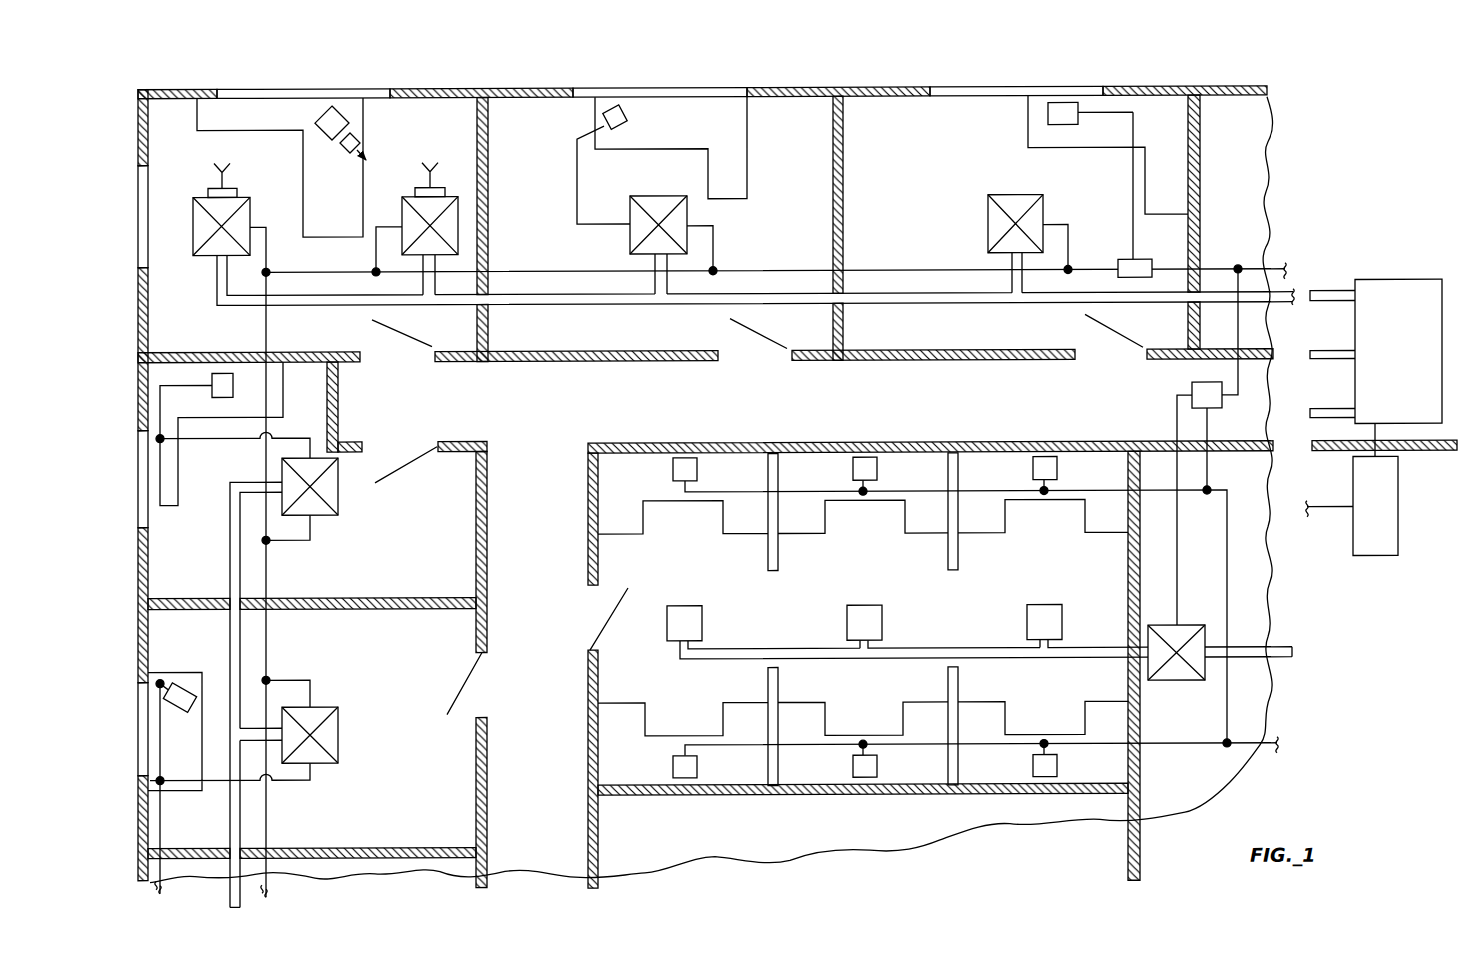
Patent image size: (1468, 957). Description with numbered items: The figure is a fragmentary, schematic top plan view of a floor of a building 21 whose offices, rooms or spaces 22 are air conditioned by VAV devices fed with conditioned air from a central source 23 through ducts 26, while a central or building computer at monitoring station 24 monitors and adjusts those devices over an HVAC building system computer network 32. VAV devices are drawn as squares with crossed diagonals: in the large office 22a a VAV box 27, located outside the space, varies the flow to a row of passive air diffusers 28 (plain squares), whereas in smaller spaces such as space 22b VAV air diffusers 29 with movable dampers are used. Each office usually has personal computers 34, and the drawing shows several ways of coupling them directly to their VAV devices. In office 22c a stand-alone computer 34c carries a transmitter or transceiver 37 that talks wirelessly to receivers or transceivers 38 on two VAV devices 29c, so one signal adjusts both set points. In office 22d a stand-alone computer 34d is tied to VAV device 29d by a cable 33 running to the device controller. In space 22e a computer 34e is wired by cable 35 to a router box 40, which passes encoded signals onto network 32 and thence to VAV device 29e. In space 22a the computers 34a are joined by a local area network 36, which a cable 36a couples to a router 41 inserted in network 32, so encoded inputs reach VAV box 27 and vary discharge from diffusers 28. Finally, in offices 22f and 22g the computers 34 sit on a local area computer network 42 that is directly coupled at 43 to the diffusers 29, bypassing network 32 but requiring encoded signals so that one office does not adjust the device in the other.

The building 21 is at (703, 82).
The offices, rooms or spaces 22 is at (858, 104).
The large office or space 22a is at (648, 570).
The small space 22b is at (385, 840).
The office 22c is at (165, 110).
The office or space 22d is at (537, 113).
The space 22e is at (898, 221).
The office 22f is at (434, 578).
The office 22g is at (430, 800).
The central source 23 is at (1408, 282).
The monitoring station 24 is at (1378, 562).
The ducts 26 is at (530, 307).
The VAV box 27 is at (1165, 683).
The passive air diffusers 28 is at (685, 607).
The VAV air diffusers 29 is at (340, 485).
The VAV devices 29c is at (193, 222).
The VAV device 29d is at (667, 197).
The VAV device 29e is at (1015, 197).
The HVAC building system computer network 32 is at (755, 270).
The cable 33 is at (577, 185).
The personal computers 34 is at (222, 373).
The computers 34a is at (673, 468).
The computer 34c is at (340, 108).
The computer 34d is at (628, 118).
The computer 34e is at (1048, 115).
The cable 35 is at (1133, 200).
The local area network 36 is at (205, 372).
The cable 36a is at (1208, 435).
The transmitter or transceiver 37 is at (360, 142).
The receivers or transceivers 38 is at (232, 178).
The router box 40 is at (1128, 262).
The router 41 is at (1195, 386).
The local area computer network 42 is at (162, 552).
The cable links 43 is at (195, 442).